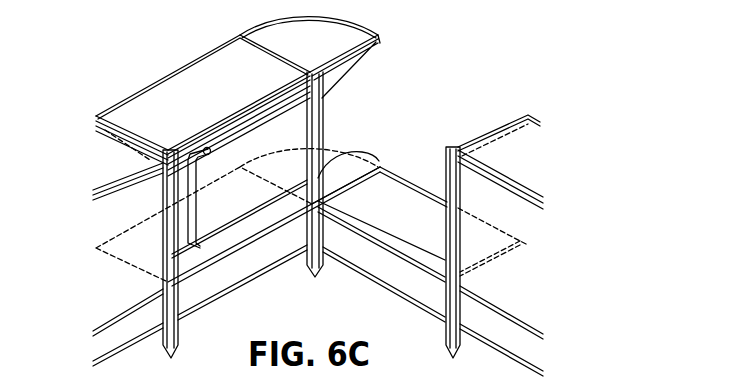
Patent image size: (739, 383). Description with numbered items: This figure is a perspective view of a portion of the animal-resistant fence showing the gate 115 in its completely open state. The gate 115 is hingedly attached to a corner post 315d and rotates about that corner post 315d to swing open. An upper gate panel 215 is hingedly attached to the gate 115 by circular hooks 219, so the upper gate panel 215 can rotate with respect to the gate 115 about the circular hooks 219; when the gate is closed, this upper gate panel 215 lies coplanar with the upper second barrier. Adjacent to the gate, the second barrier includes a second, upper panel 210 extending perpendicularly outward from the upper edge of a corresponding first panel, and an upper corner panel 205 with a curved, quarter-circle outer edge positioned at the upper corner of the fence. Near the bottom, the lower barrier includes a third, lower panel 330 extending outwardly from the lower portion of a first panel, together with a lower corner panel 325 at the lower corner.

The second panel 210 is at (213, 62).
The upper corner panel 205 is at (330, 47).
The circular hooks 219 is at (263, 130).
The upper gate panel 215 is at (298, 142).
The corner post 315d is at (362, 152).
The lower corner panel 325 is at (380, 162).
The lower panel 330 is at (380, 192).
The gate 115 is at (260, 225).